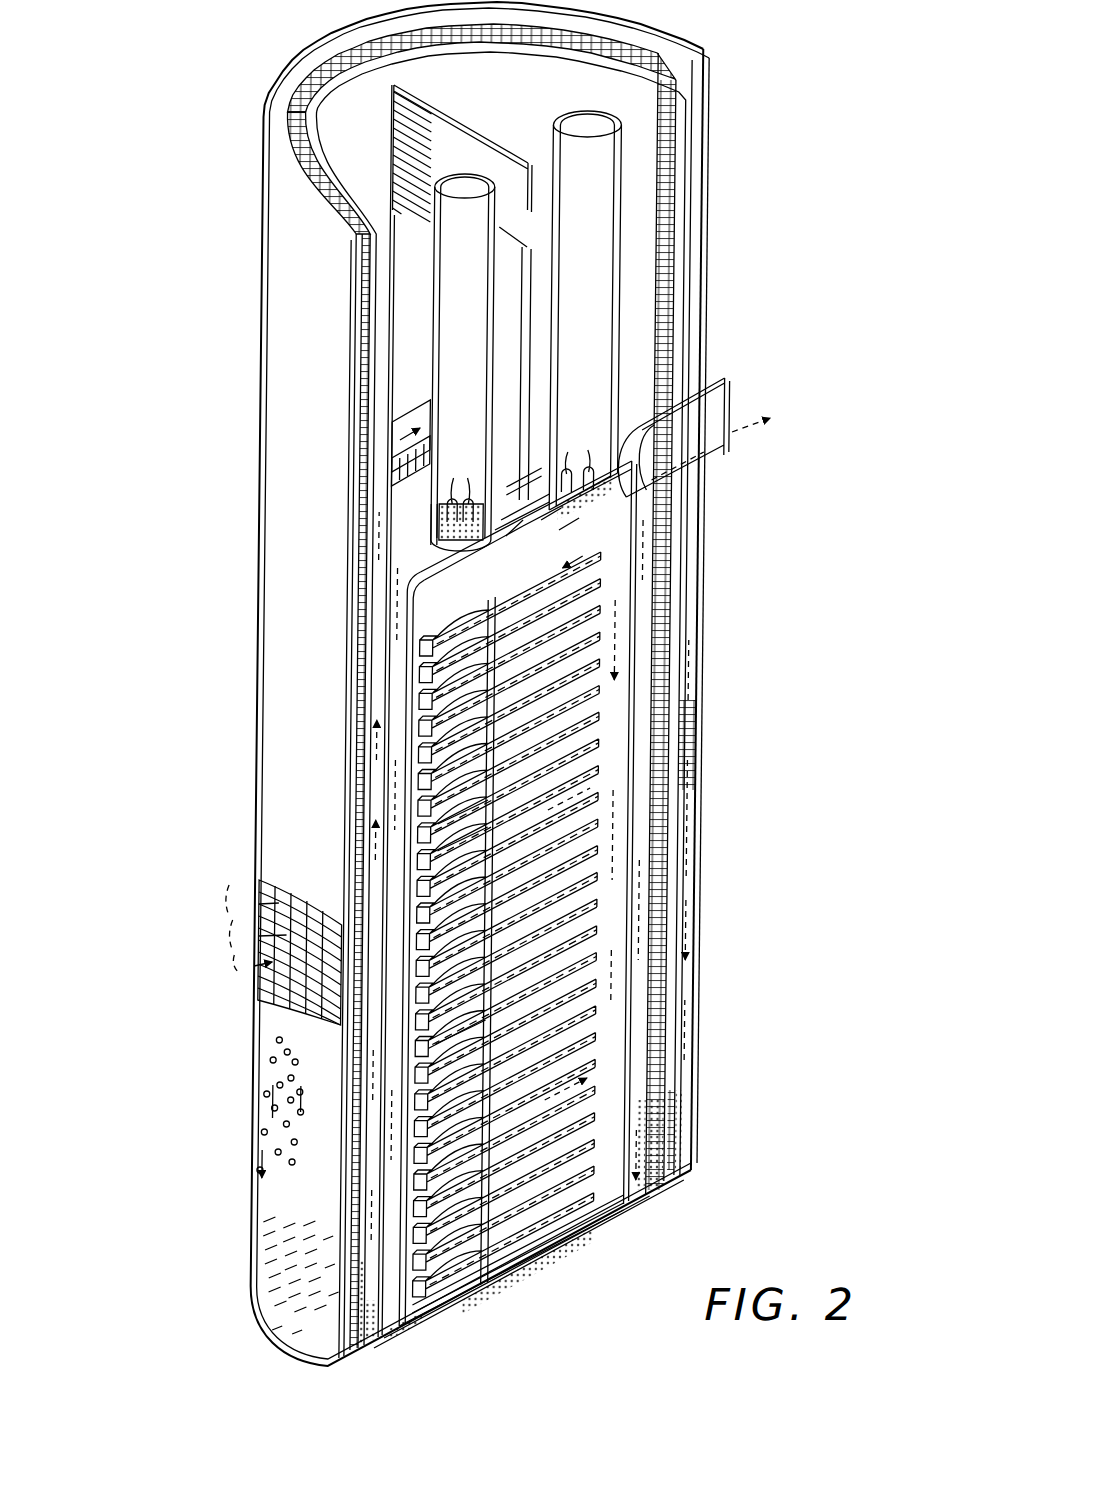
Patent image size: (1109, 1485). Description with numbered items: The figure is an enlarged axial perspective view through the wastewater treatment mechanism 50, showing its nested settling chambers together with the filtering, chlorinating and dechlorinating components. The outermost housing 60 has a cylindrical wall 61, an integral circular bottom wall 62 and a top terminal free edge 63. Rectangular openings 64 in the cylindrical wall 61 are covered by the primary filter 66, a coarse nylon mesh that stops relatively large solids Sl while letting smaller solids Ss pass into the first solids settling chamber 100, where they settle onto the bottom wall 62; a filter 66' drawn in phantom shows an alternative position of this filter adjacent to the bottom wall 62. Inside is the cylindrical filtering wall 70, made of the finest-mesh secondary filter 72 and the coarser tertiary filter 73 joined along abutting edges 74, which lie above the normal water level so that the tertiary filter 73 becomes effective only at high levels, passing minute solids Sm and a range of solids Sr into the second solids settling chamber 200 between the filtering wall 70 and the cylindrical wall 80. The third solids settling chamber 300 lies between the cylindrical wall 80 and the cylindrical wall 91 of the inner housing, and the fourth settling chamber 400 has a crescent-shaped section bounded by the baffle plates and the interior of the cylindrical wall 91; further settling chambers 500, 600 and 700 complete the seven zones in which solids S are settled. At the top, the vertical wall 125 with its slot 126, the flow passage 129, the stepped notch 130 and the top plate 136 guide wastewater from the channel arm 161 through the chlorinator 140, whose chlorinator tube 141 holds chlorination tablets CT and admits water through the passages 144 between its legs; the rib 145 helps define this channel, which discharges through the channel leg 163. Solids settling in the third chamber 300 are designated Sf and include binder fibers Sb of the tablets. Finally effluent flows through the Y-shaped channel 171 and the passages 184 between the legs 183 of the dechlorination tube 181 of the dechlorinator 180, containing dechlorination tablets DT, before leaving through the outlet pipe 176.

The wastewater treatment mechanism 50 is at (772, 90).
The outermost housing 60 is at (254, 690).
The cylindrical wall 61 is at (704, 318).
The bottom wall 62 is at (520, 1280).
The top terminal free edge 63 is at (681, 43).
The openings 64 is at (300, 934).
The primary filter 66 is at (472, 862).
The filter 66' is at (462, 1209).
The cylindrical filtering wall 70 is at (356, 678).
The secondary filter 72 is at (668, 374).
The tertiary filter 73 is at (668, 166).
The abutting edges 74 is at (670, 264).
The cylindrical wall 80 is at (512, 106).
The cylindrical wall 91 is at (628, 836).
The first solids settling chamber 100 is at (686, 984).
The vertical wall 125 is at (420, 116).
The rectangular slot 126 is at (498, 196).
The flow passage 129 is at (490, 532).
The stepped notch 130 is at (420, 582).
The top plate 136 is at (542, 569).
The dry tablet chlorinator 140 is at (452, 198).
The chlorinator tube 141 is at (484, 322).
The passages 144 is at (462, 496).
The right-angle rib 145 is at (394, 466).
The channel arm 161 is at (410, 462).
The channel leg 163 is at (430, 564).
The Y-shaped channel 171 is at (516, 464).
The outlet pipe 176 is at (706, 411).
The dechlorinating means 180 is at (580, 114).
The dechlorination tube 181 is at (600, 224).
The legs 183 is at (604, 460).
The passages 184 is at (576, 460).
The second solids settling chamber 200 is at (376, 740).
The third solids settling chamber 300 is at (396, 858).
The fourth settling chamber 400 is at (426, 1320).
The solids settling chamber 500 is at (592, 724).
The solids settling chamber 600 is at (646, 1110).
The solids settling chamber 700 is at (480, 580).
The chlorination tablets CT is at (506, 518).
The dechlorination tablets DT is at (709, 449).
The solids S is at (525, 862).
The large solids Sl is at (268, 1096).
The smaller solids Ss is at (676, 1154).
The minute solids Sm is at (392, 1350).
The range of solids Sr is at (640, 1145).
The settled solids Sf is at (412, 1334).
The binder fibers Sb is at (546, 1264).